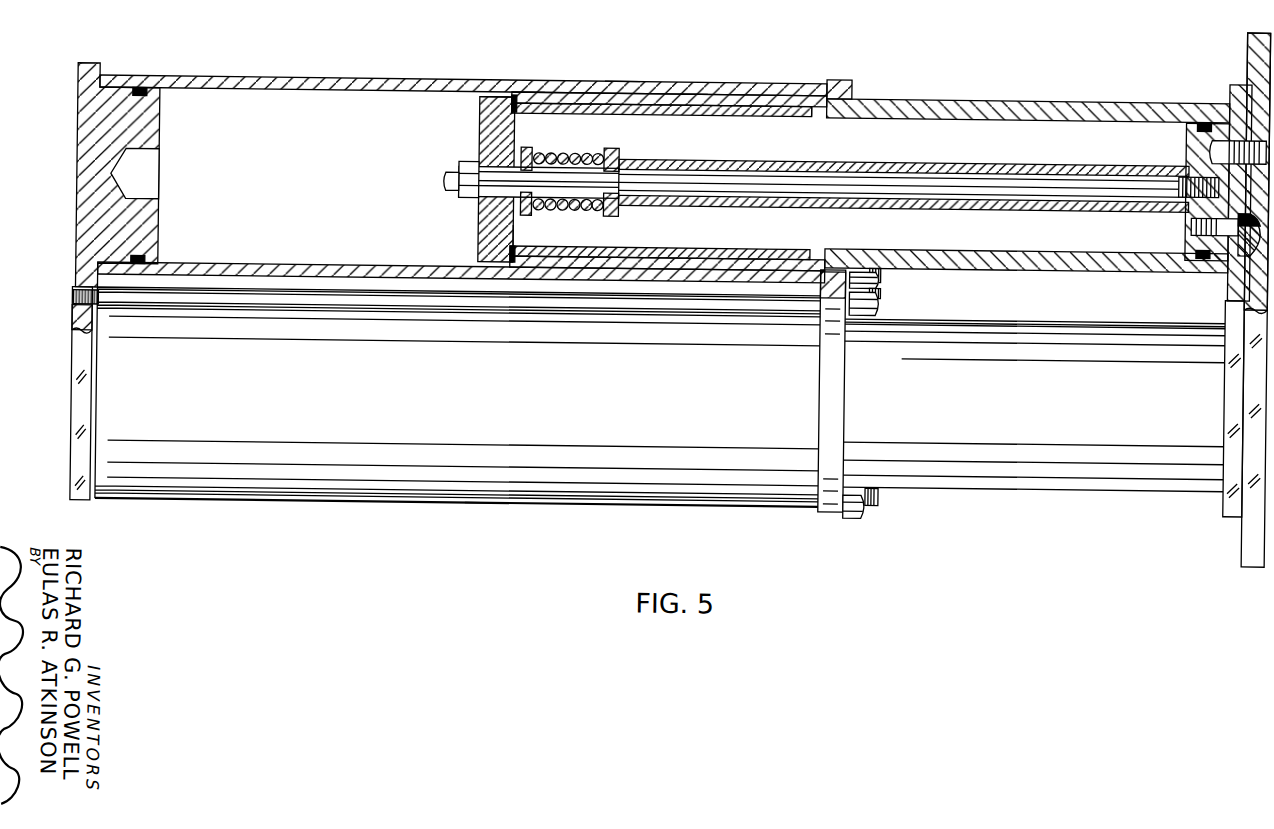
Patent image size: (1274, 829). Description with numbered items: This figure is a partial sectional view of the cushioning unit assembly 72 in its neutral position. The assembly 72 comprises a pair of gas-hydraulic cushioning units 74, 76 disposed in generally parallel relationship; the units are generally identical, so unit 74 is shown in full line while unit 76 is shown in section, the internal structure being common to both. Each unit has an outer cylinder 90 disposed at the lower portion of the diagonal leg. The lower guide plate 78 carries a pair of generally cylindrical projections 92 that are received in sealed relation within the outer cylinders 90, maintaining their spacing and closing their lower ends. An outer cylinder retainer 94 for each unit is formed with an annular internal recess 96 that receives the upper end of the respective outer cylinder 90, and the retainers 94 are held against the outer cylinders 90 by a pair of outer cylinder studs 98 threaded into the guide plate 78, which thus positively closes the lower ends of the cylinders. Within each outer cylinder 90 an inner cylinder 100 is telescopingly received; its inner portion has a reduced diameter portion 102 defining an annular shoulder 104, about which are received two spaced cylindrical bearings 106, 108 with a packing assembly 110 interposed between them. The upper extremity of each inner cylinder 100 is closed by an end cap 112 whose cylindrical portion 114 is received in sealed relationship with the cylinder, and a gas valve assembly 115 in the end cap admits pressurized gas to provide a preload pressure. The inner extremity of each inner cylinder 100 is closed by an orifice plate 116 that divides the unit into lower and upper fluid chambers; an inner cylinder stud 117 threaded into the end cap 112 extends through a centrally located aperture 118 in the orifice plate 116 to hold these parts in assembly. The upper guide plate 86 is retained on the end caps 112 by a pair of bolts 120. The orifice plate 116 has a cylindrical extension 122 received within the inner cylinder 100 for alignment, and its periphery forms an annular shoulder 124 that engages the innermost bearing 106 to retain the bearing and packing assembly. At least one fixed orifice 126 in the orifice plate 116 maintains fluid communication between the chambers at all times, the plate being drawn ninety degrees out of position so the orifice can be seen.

The cushioning unit assembly 72 is at (490, 504).
The gas-hydraulic cushioning unit 74 is at (541, 74).
The gas-hydraulic cushioning unit 76 is at (395, 502).
The guide plate 78 is at (80, 405).
The guide plate 86 is at (1258, 538).
The outer cylinder 90 is at (384, 75).
The cylindrical projection 92 is at (152, 134).
The outer cylinder retainer 94 is at (852, 88).
The annular internal recess 96 is at (829, 71).
The outer cylinder stud 98 is at (884, 304).
The inner cylinder 100 is at (1043, 90).
The reduced diameter portion 102 is at (715, 96).
The annular shoulder 104 is at (811, 102).
The cylindrical bearing 106 is at (623, 75).
The cylindrical bearing 108 is at (775, 100).
The packing assembly 110 is at (693, 86).
The end cap 112 is at (1239, 62).
The cylindrical portion 114 is at (1233, 88).
The gas valve assembly 115 is at (1193, 222).
The orifice plate 116 is at (490, 245).
The inner cylinder stud 117 is at (1005, 198).
The centrally located aperture 118 is at (472, 191).
The bolt 120 is at (1190, 150).
The cylindrical extension 122 is at (515, 238).
The annular shoulder 124 is at (520, 104).
The fixed orifice 126 is at (498, 122).